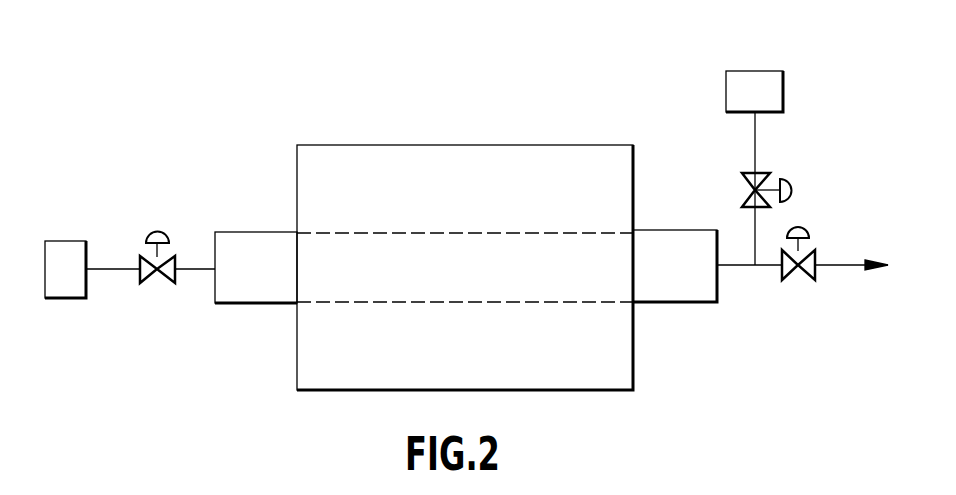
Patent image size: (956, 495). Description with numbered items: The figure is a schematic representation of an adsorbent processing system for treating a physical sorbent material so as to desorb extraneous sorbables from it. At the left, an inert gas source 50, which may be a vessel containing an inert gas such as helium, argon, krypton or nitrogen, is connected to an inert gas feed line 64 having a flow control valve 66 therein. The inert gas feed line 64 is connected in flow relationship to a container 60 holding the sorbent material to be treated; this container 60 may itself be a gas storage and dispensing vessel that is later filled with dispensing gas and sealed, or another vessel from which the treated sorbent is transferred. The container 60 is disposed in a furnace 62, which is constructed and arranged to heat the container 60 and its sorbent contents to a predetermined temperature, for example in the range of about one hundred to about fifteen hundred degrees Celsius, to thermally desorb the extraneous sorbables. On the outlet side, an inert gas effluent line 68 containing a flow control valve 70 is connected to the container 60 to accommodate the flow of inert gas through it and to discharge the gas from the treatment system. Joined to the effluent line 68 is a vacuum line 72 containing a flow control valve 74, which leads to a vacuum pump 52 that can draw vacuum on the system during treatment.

The inert gas source 50 is at (52, 241).
The vacuum pump 52 is at (755, 71).
The container 60 is at (263, 305).
The furnace 62 is at (473, 145).
The inert gas feed line 64 is at (97, 272).
The flow control valve 66 is at (153, 228).
The inert gas effluent line 68 is at (738, 267).
The flow control valve 70 is at (802, 228).
The vacuum line 72 is at (755, 145).
The flow control valve 74 is at (792, 183).